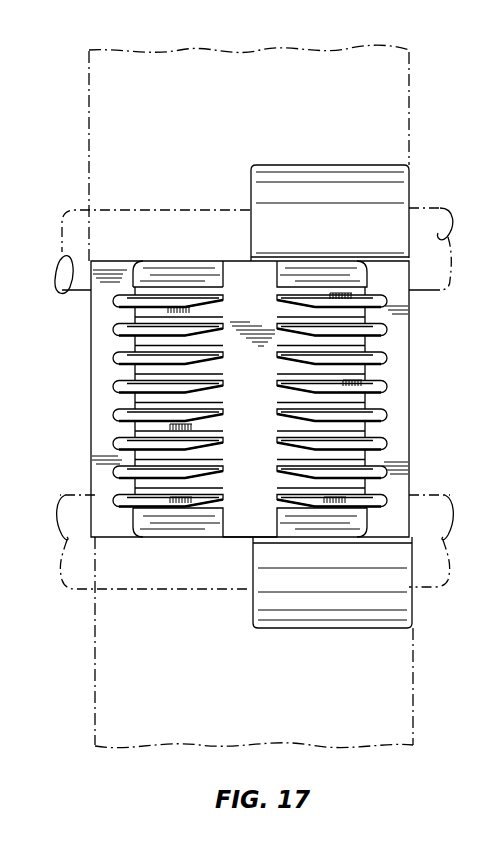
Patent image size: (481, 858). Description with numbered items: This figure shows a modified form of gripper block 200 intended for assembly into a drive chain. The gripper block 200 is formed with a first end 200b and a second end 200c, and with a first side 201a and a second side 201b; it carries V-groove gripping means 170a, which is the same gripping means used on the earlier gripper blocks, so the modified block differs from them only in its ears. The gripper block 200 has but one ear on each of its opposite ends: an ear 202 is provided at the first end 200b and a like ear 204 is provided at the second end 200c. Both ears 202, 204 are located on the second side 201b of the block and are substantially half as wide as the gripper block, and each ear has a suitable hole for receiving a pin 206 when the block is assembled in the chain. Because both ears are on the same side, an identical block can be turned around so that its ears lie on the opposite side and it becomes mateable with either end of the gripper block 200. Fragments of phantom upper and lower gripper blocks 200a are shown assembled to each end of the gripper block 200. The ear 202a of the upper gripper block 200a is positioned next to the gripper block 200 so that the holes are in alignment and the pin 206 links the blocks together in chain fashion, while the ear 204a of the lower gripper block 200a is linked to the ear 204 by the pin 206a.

The gripper block 200 is at (258, 372).
The phantom gripper block 200a is at (251, 93).
The first end 200b is at (163, 261).
The second end 200c is at (178, 540).
The first side 201a is at (129, 372).
The second side 201b is at (480, 431).
The ear 202 is at (324, 184).
The ear 202a is at (104, 238).
The ear 204 is at (333, 603).
The ear 204a is at (125, 560).
The pin 206 is at (430, 216).
The pin 206a is at (437, 572).
The V-groove gripping means 170a is at (245, 520).